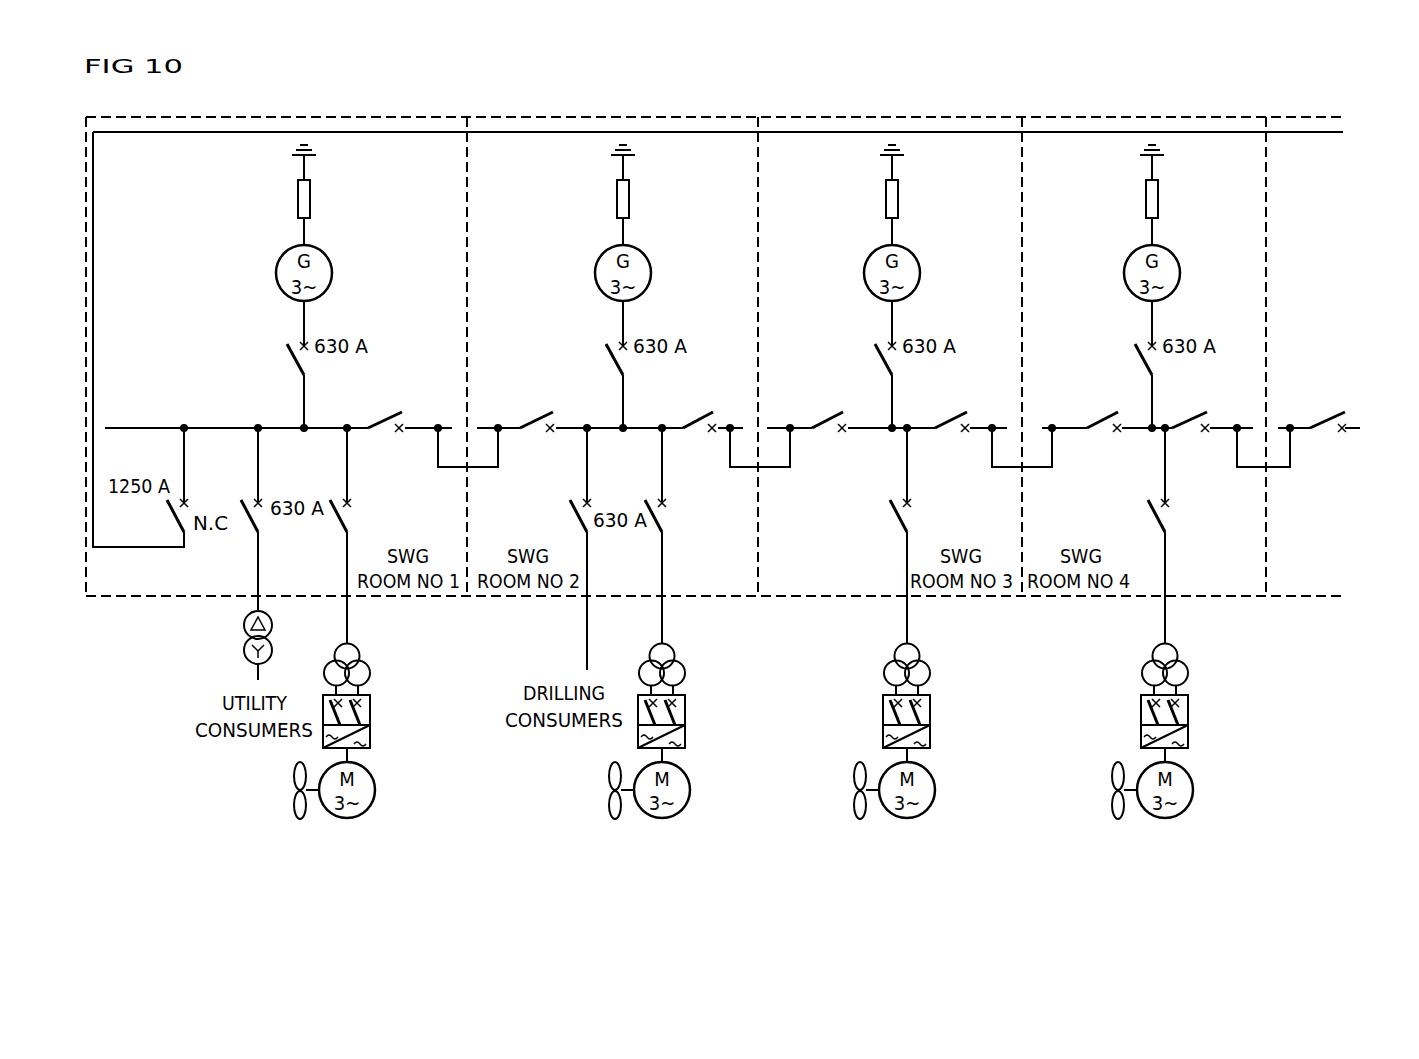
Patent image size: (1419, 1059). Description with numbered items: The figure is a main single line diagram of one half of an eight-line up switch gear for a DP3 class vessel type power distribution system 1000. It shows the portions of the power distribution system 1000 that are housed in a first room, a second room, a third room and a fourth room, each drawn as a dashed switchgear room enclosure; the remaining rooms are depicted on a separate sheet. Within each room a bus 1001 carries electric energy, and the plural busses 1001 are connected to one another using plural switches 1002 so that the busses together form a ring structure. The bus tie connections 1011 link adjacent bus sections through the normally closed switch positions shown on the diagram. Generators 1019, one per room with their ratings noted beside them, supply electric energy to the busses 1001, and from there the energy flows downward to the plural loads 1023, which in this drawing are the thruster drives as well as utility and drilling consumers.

The power distribution system 1000 is at (138, 744).
The busses 1001 is at (280, 432).
The switches 1002 is at (623, 130).
The bus-tie switch (normally closed) 1011 is at (392, 372).
The generators 1019 is at (323, 250).
The loads 1023 is at (376, 790).